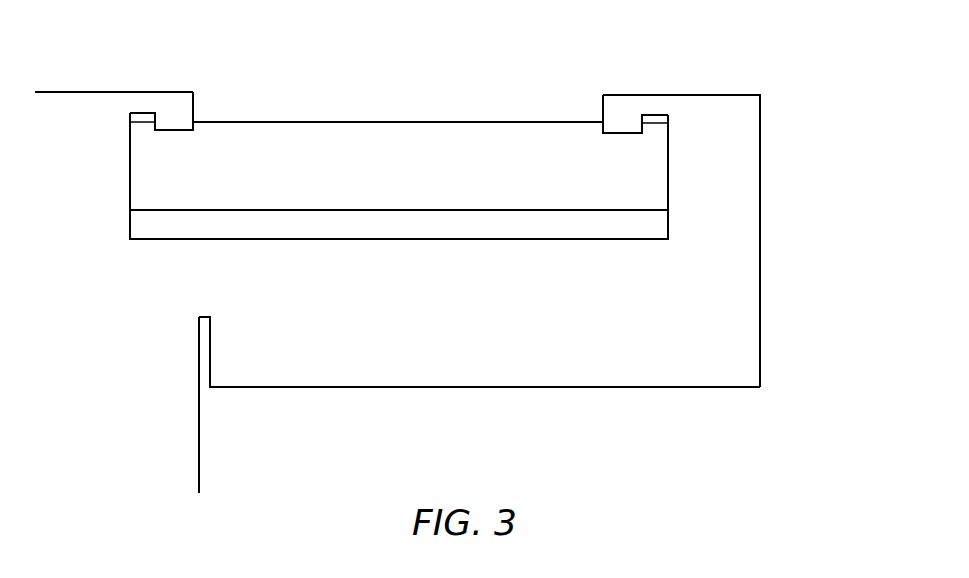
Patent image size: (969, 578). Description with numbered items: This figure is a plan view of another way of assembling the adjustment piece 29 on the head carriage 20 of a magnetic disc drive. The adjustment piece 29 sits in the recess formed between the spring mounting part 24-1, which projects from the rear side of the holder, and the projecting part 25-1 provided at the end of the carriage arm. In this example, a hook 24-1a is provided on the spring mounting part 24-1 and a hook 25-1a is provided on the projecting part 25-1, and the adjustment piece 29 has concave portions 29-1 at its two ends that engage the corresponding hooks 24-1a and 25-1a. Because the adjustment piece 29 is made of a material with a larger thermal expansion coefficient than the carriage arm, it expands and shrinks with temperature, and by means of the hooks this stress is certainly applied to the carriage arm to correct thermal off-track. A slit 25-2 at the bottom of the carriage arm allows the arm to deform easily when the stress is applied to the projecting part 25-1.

The head carriage 20 is at (182, 445).
The spring mounting part 24-1 is at (60, 107).
The hook 24-1a is at (168, 110).
The projecting part 25-1 is at (728, 265).
The hook 25-1a is at (620, 103).
The slit 25-2 is at (210, 353).
The adjustment piece 29 is at (408, 137).
The concave portion 29-1 is at (177, 130).